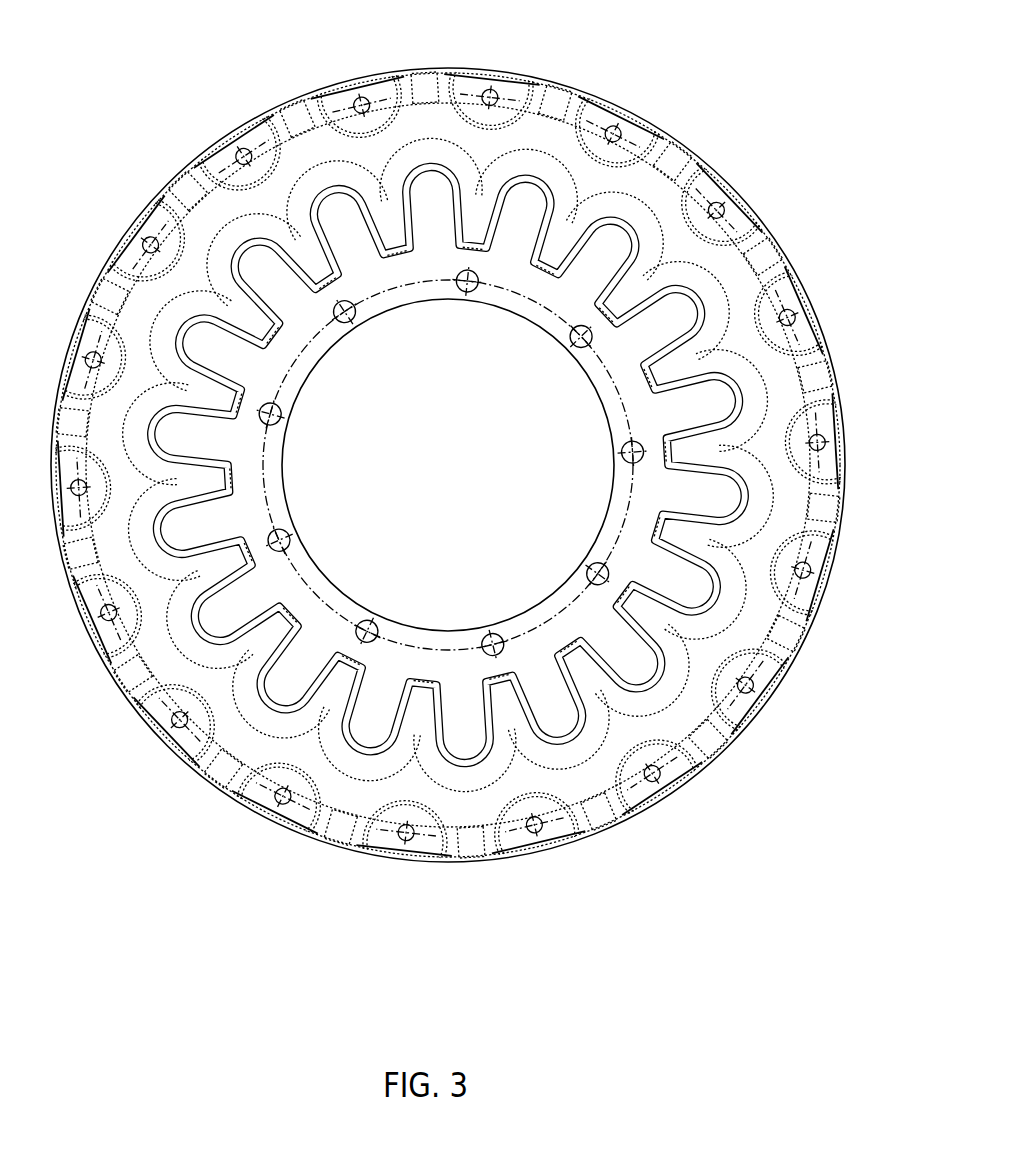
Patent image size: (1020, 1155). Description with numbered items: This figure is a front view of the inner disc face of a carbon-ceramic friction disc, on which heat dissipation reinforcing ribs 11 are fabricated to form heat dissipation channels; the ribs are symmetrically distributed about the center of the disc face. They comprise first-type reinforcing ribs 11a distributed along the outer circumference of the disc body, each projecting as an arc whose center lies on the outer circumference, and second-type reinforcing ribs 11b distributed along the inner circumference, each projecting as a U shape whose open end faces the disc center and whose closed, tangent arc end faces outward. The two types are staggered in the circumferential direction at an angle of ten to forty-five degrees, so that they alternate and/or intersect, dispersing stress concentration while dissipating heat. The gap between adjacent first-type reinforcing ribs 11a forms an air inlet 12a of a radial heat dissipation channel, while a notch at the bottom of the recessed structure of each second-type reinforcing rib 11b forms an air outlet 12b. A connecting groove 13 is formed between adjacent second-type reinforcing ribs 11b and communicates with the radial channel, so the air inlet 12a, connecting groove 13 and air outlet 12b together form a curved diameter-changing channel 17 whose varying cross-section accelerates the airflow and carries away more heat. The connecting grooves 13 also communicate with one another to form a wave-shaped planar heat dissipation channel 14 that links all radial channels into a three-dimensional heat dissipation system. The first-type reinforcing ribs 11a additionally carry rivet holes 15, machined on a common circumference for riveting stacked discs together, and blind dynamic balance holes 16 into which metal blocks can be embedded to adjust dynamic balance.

The heat dissipation reinforcing rib 11 is at (433, 217).
The first-type reinforcing rib 11a is at (646, 140).
The second-type reinforcing rib 11b is at (598, 258).
The air inlet 12a is at (751, 264).
The air outlet 12b is at (678, 358).
The connecting groove 13 is at (773, 397).
The wave-shaped planar heat dissipation channel 14 is at (777, 508).
The rivet hole 15 is at (744, 684).
The dynamic balance hole 16 is at (813, 572).
The curved diameter-changing channel 17 is at (748, 268).